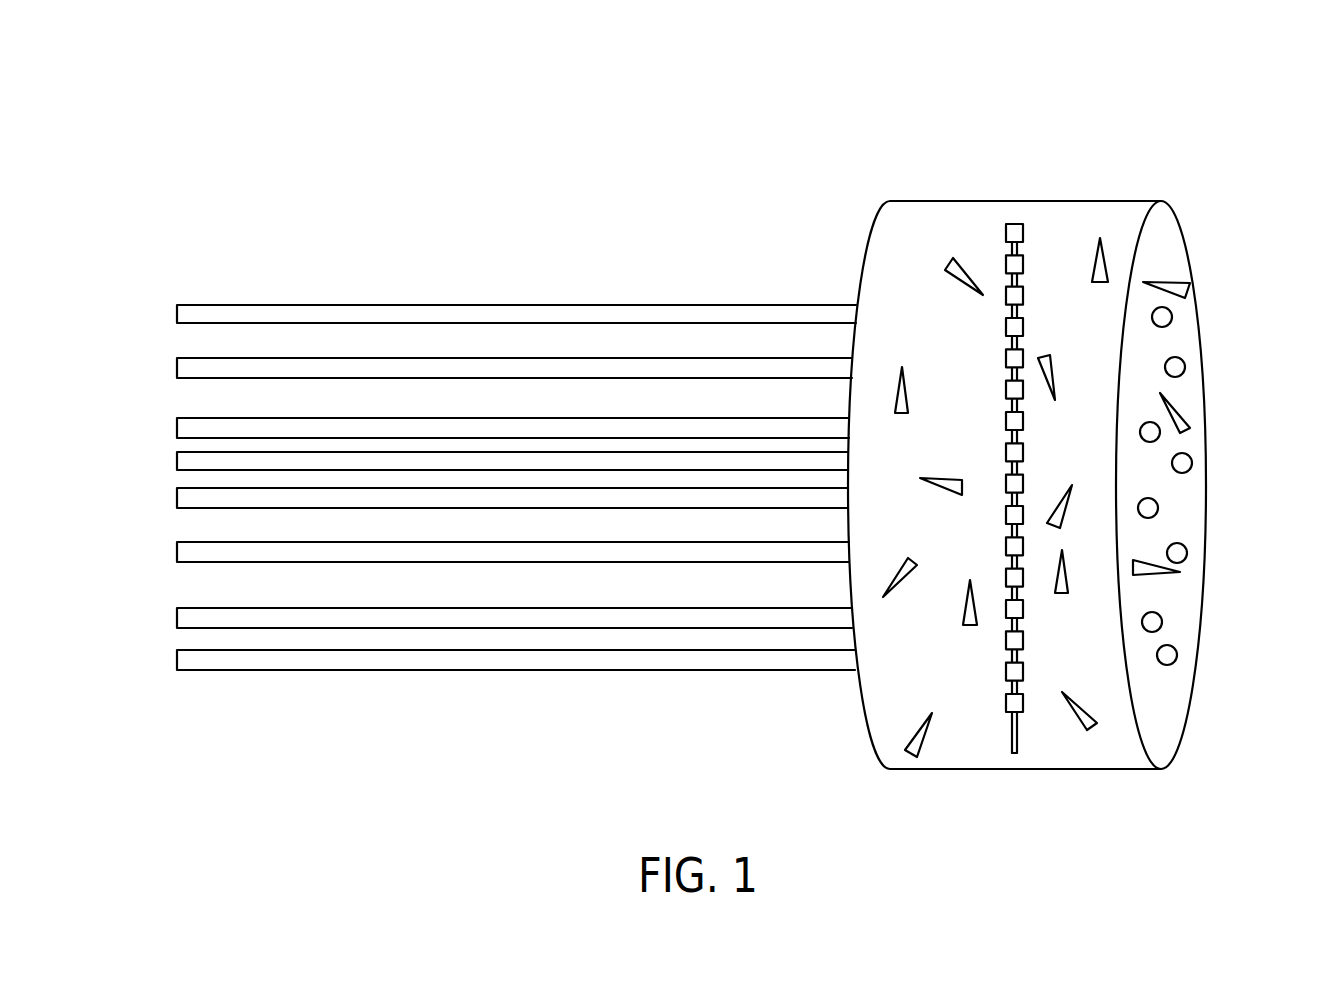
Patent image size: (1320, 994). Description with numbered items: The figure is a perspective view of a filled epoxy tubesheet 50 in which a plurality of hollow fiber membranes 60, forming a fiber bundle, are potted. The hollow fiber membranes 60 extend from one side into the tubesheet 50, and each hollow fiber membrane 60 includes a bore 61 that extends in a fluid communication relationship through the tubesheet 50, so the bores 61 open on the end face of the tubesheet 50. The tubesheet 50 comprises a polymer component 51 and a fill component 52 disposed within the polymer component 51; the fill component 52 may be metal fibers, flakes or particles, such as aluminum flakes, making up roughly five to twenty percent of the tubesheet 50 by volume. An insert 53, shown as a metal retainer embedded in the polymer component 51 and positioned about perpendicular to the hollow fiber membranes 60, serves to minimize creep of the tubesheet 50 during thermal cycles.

The tubesheet 50 is at (933, 130).
The polymer component 51 is at (866, 257).
The fill component 52 is at (957, 279).
The insert 53 is at (1006, 672).
The hollow fiber membranes 60 is at (395, 305).
The bore 61 is at (1192, 463).